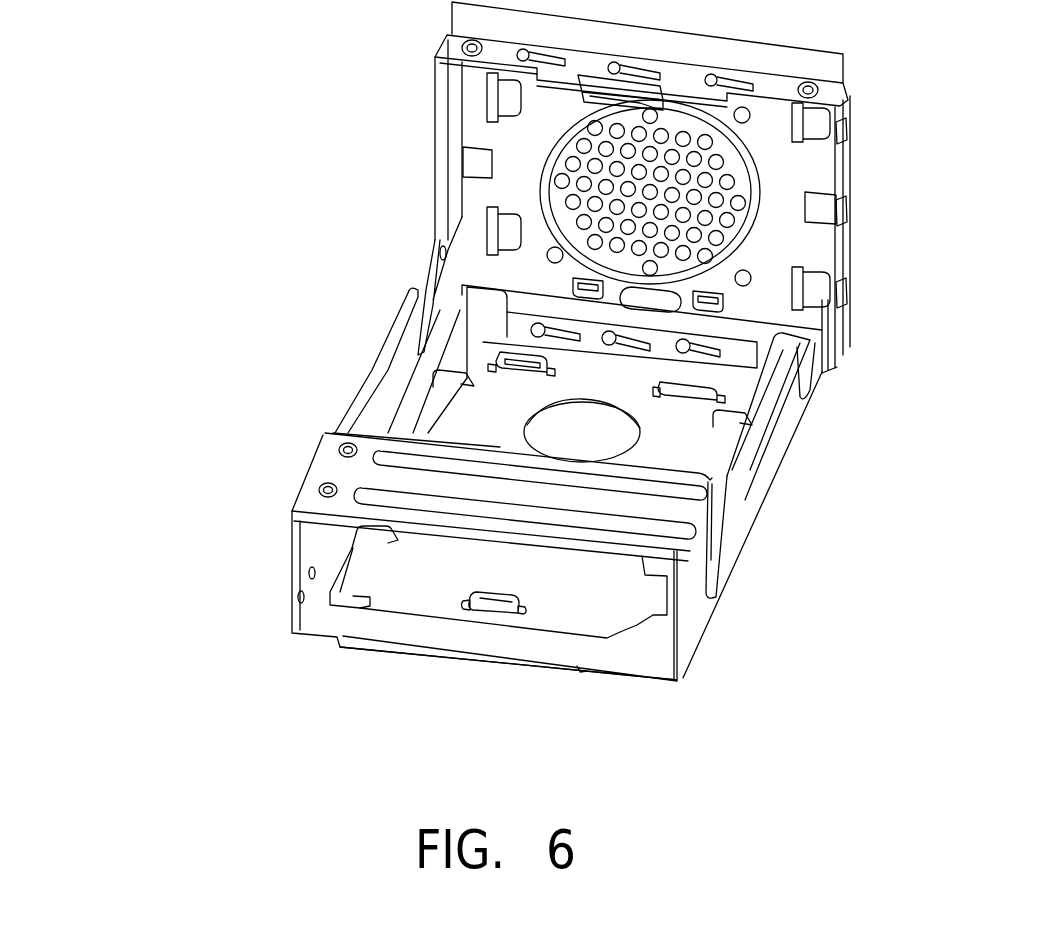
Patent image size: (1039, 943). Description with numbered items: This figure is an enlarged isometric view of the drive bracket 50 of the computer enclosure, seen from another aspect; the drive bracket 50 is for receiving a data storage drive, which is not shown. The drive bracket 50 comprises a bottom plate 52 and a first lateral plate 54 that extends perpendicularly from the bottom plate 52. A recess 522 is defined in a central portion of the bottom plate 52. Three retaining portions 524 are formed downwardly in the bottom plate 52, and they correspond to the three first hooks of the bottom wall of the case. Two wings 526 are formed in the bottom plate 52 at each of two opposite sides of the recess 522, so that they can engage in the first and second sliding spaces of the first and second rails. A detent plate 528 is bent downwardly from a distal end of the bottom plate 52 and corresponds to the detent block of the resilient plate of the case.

The drive bracket 50 is at (587, 383).
The bottom plate 52 is at (497, 526).
The first lateral plate 54 is at (634, 187).
The recess 522 is at (450, 547).
The retaining portions 524 is at (498, 603).
The wings 526 is at (370, 556).
The detent plate 528 is at (545, 672).